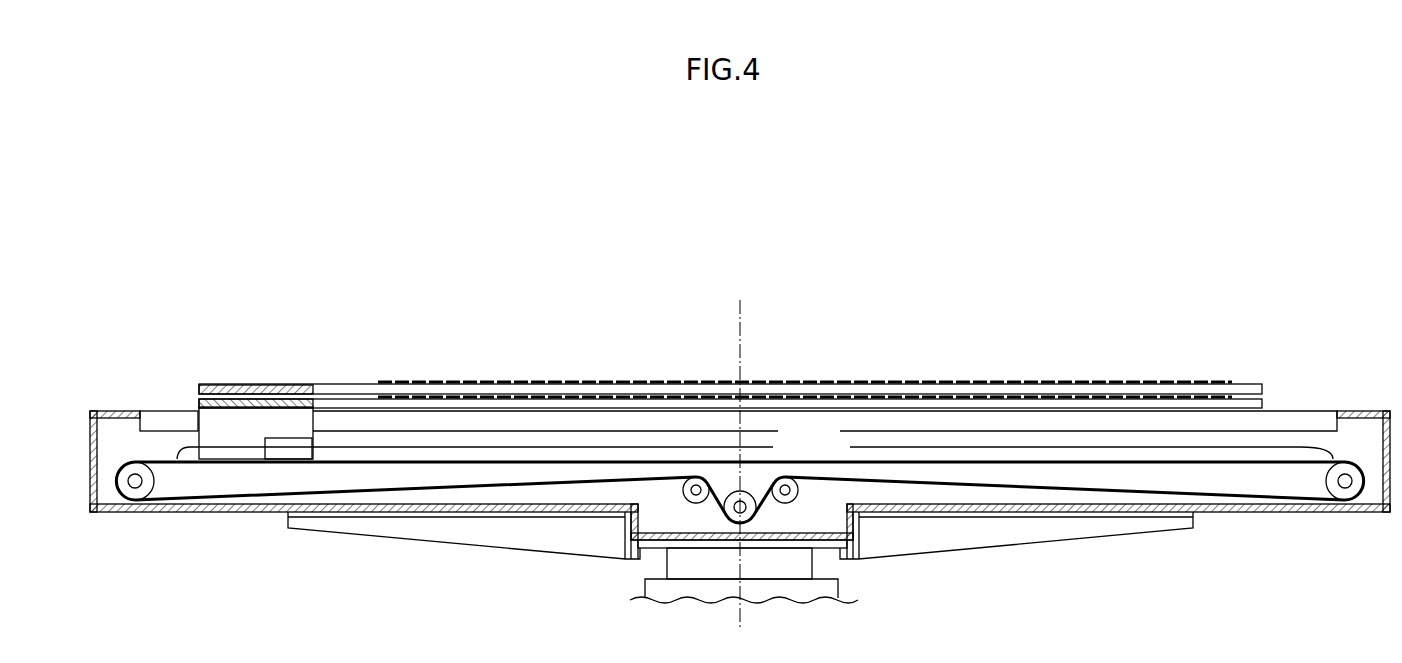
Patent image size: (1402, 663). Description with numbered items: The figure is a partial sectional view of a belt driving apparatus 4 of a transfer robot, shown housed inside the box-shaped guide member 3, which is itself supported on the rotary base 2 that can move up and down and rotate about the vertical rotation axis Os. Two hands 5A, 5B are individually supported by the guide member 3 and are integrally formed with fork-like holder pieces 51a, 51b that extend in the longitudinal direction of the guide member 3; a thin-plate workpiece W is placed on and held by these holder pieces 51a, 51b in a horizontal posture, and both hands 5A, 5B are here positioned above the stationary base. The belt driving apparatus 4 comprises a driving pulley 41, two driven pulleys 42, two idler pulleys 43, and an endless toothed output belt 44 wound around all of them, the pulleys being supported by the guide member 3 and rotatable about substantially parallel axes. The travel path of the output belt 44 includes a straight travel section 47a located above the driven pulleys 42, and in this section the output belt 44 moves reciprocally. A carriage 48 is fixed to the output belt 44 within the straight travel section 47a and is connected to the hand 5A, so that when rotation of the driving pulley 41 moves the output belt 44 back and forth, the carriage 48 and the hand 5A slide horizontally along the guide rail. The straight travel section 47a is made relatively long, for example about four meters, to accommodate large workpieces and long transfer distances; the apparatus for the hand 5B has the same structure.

The rotary base 2 is at (805, 567).
The guide member 3 is at (1227, 516).
The belt driving apparatus 4 is at (906, 489).
The hand 5A is at (219, 396).
The hand 5B is at (259, 381).
The driving pulley 41 is at (735, 520).
The driven pulley 42 is at (137, 493).
The idler pulley 43 is at (688, 500).
The output belt 44 is at (1082, 463).
The straight travel section 47a is at (850, 447).
The carriage 48 is at (303, 443).
The holder piece 51a is at (1047, 402).
The holder piece 51b is at (1112, 388).
The workpiece W is at (937, 383).
The rotation axis Os is at (746, 333).